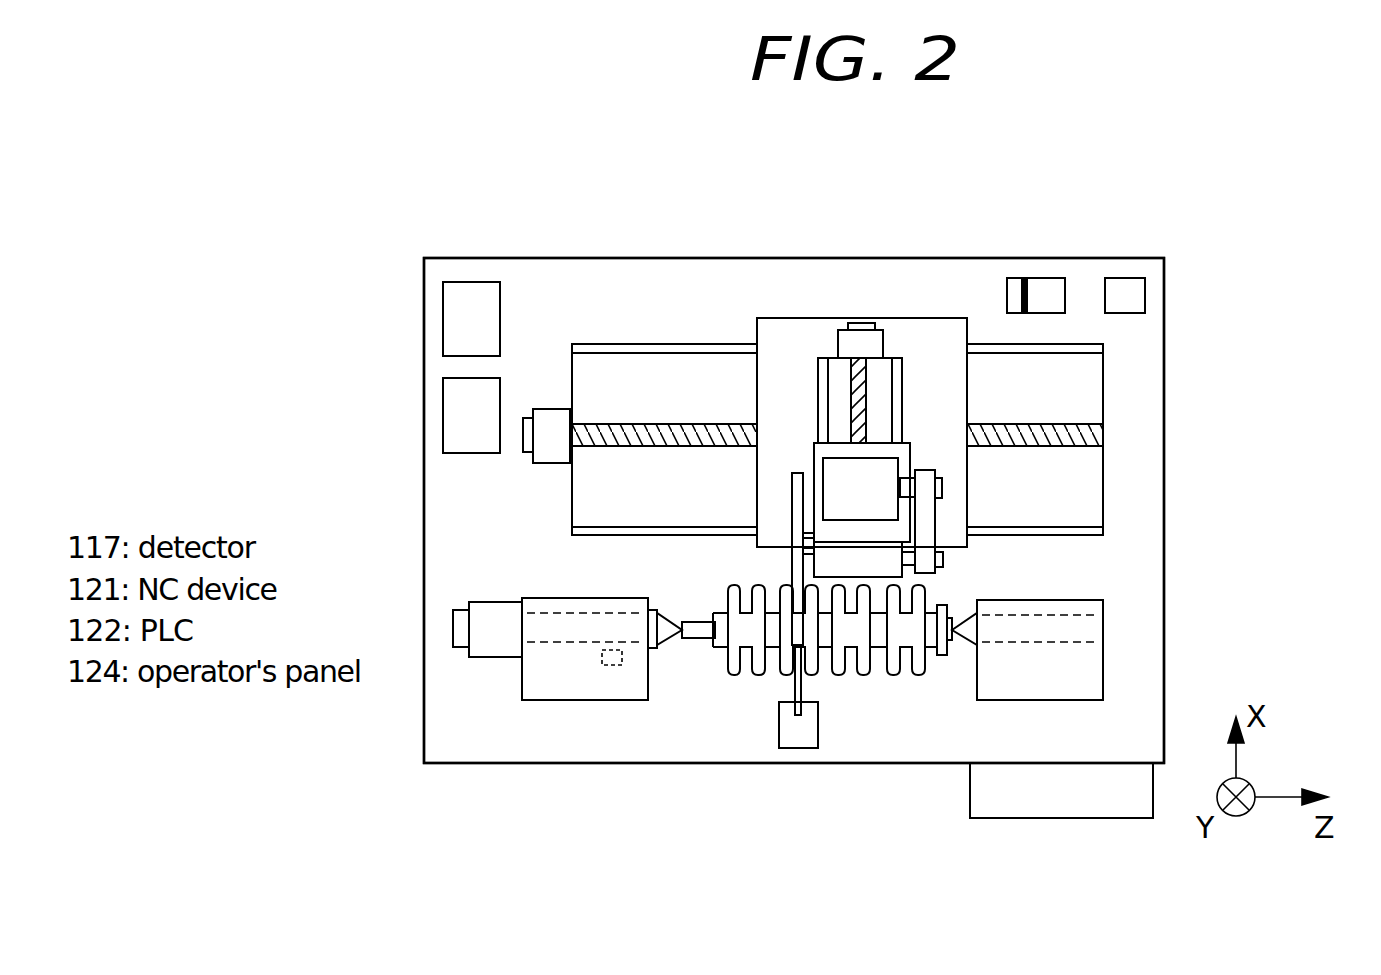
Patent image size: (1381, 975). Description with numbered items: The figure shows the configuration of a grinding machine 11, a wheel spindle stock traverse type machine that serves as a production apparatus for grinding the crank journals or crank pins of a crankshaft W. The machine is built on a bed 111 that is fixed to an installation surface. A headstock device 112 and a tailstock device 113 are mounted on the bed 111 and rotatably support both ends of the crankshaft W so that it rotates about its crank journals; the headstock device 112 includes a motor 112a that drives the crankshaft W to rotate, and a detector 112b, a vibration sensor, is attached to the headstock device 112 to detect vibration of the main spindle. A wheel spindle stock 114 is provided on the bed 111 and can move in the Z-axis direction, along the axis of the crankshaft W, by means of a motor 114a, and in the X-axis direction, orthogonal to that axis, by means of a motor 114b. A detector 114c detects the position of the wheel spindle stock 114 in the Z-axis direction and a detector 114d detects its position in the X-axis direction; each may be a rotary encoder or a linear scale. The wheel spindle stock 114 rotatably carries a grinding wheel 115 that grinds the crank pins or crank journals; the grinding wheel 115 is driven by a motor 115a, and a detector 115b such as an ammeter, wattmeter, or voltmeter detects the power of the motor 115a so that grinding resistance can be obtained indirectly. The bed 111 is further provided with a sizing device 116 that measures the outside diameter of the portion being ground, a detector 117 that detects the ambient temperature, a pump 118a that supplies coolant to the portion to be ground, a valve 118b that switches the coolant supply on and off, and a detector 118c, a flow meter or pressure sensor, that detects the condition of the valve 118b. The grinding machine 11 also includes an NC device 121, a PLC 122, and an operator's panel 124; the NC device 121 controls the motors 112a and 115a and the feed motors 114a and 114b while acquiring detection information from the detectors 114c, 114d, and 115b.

The grinding machine 11 is at (1180, 240).
The bed 111 is at (1118, 258).
The headstock device 112 is at (579, 692).
The motor 112a is at (492, 657).
The detector (vibration sensor) 112b is at (612, 665).
The tailstock device 113 is at (1103, 652).
The wheel spindle stock 114 is at (910, 450).
The motor 114a is at (555, 408).
The motor 114b is at (882, 340).
The detector 114c is at (530, 410).
The detector 114d is at (862, 323).
The grinding wheel 115 is at (792, 527).
The motor 115a is at (842, 455).
The detector 115b is at (815, 463).
The sizing device 116 is at (795, 728).
The detector 117 is at (1142, 295).
The pump 118a is at (1050, 282).
The valve 118b is at (1017, 278).
The detector 118c is at (1007, 300).
The NC device 121 is at (443, 298).
The PLC 122 is at (443, 398).
The operator's panel 124 is at (1110, 820).
The crankshaft W is at (860, 675).